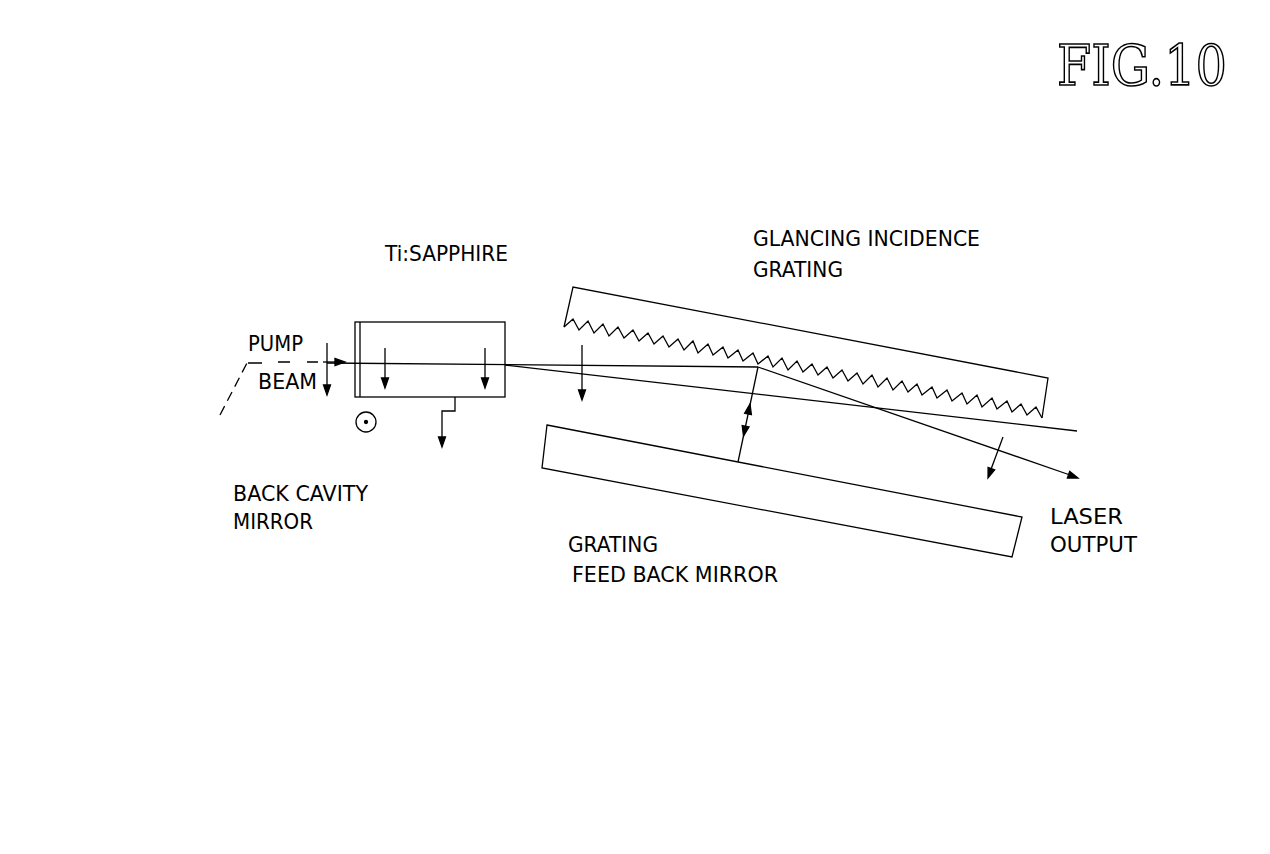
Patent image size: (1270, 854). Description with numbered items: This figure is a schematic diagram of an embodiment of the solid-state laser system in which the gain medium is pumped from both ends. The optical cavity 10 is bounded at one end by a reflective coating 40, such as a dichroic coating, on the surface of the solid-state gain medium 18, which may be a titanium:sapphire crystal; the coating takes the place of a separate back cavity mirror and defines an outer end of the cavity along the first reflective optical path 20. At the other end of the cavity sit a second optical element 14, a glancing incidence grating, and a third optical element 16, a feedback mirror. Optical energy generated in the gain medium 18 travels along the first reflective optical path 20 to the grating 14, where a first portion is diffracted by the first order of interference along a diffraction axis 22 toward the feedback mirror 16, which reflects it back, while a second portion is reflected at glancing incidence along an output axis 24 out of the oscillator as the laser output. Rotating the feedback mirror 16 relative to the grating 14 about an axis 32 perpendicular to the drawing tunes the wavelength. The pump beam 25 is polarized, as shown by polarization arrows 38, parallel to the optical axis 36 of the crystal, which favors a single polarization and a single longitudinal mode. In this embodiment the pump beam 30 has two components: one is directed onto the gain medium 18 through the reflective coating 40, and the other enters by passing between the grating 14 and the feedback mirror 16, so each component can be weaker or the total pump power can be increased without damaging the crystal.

The optical cavity 10 is at (925, 338).
The second optical element 14 is at (622, 296).
The third optical element 16 is at (977, 548).
The solid-state gain medium 18 is at (483, 322).
The first reflective optical path 20 is at (527, 370).
The diffraction axis 22 is at (750, 397).
The output axis 24 is at (965, 442).
The pump beam 25 is at (322, 358).
The pump beam 30 is at (249, 404).
The axis 32 is at (375, 417).
The optical axis 36 is at (443, 423).
The polarization arrows 38 is at (335, 373).
The reflective coating 40 is at (357, 350).